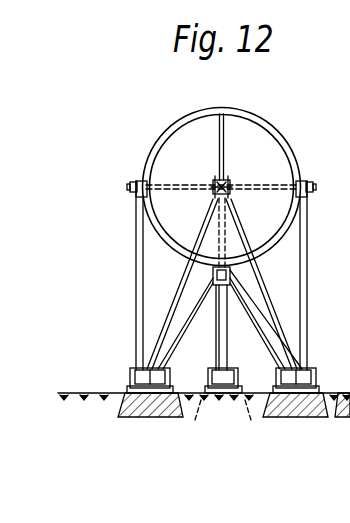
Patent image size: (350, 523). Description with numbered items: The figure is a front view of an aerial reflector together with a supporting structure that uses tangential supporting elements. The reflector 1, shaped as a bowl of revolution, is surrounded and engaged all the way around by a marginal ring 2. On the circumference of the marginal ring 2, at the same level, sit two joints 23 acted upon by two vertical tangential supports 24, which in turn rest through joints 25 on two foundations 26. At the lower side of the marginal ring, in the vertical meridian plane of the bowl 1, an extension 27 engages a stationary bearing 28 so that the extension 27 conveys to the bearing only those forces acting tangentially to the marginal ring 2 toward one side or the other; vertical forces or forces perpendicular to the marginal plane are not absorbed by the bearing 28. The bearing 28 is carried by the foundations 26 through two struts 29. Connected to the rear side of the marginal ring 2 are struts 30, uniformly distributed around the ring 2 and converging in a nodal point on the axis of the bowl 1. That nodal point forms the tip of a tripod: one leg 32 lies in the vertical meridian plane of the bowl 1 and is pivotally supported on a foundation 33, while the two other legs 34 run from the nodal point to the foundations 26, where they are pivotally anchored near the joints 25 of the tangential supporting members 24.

The reflector 1 is at (262, 145).
The marginal ring 2 is at (232, 113).
The joints 23 is at (128, 187).
The vertical tangential supports 24 is at (136, 238).
The joints 25 is at (135, 376).
The foundations 26 is at (152, 408).
The extension 27 is at (258, 289).
The stationary bearing 28 is at (213, 274).
The struts 29 is at (174, 352).
The struts 30 is at (221, 162).
The leg 32 is at (219, 326).
The foundation 33 is at (239, 392).
The legs 34 is at (183, 285).